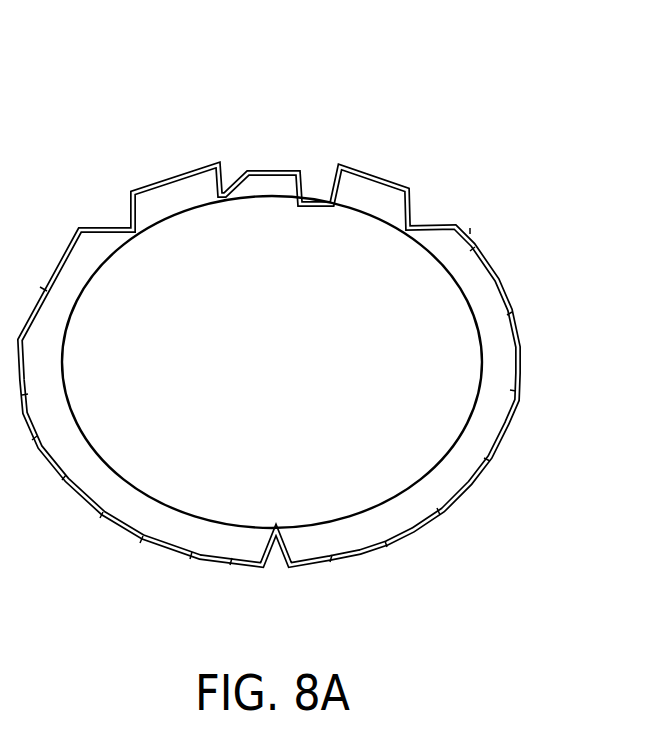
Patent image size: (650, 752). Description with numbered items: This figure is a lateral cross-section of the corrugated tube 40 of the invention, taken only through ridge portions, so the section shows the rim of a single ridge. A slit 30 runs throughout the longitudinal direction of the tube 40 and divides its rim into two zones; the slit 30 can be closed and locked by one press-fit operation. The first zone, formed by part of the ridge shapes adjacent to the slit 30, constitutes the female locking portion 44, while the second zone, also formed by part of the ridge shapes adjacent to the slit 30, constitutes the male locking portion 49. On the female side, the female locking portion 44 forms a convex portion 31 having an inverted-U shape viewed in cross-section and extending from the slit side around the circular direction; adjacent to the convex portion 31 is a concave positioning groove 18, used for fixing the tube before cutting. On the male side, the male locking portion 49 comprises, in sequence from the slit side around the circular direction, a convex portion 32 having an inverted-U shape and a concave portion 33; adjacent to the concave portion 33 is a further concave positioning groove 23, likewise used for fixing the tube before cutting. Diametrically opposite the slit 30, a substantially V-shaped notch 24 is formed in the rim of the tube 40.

The concave positioning groove 18 is at (113, 217).
The concave positioning groove 23 is at (420, 212).
The V-shaped notch 24 is at (277, 575).
The slit 30 is at (258, 183).
The convex portion 31 is at (232, 188).
The convex portion 32 is at (262, 172).
The concave portion 33 is at (318, 195).
The corrugated tube 40 is at (534, 337).
The female locking portion 44 is at (163, 167).
The male locking portion 49 is at (312, 162).